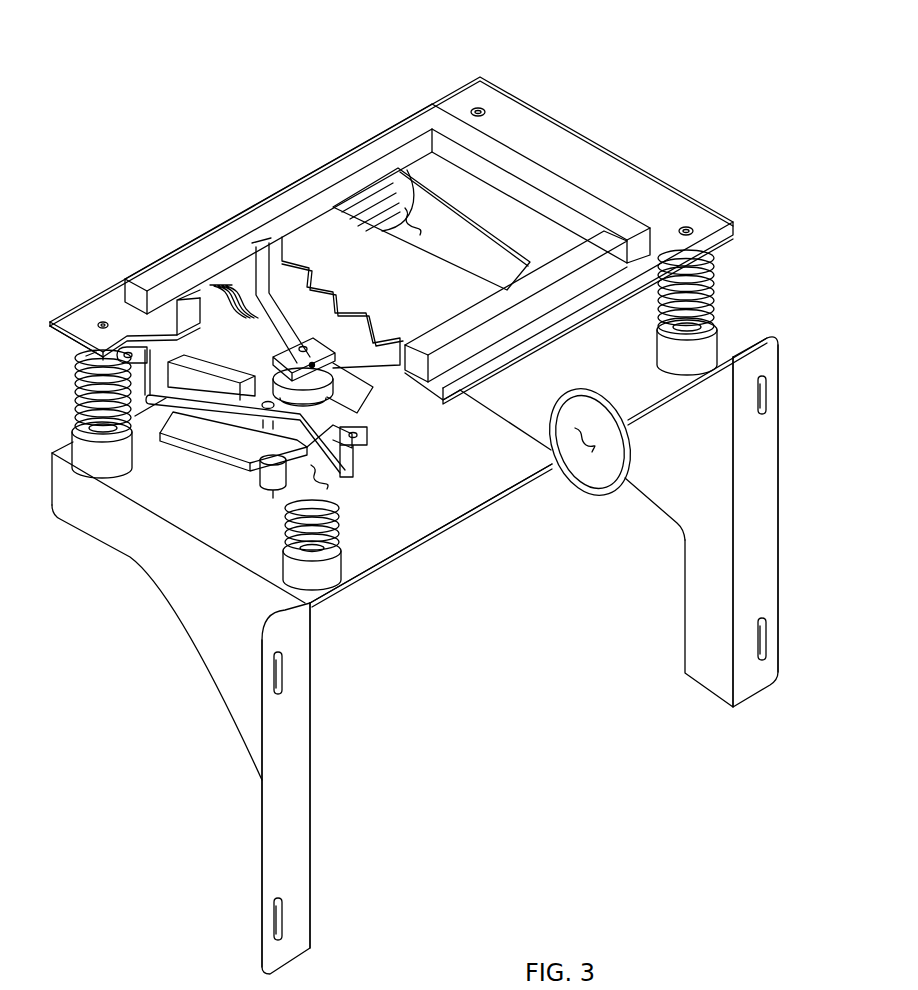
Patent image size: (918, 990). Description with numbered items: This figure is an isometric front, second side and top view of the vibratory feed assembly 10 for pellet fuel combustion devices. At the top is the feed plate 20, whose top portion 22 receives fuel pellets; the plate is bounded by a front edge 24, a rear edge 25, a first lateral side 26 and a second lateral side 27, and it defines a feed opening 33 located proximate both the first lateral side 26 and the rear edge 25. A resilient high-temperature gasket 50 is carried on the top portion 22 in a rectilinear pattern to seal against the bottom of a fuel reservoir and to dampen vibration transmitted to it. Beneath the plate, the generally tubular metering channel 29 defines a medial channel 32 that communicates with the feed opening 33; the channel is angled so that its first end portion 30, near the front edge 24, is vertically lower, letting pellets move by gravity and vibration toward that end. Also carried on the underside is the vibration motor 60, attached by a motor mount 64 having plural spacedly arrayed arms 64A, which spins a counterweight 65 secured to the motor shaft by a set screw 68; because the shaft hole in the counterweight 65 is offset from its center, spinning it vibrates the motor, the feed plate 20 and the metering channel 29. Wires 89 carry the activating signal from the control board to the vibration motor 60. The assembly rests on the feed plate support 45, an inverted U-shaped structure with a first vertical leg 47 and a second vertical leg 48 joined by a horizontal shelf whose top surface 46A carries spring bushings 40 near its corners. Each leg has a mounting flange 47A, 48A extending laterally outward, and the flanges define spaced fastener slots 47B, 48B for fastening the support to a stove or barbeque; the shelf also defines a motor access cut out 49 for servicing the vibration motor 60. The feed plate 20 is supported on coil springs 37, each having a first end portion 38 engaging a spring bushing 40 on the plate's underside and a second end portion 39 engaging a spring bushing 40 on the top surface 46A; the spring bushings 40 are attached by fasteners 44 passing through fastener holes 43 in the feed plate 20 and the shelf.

The vibratory feed assembly 10 is at (346, 131).
The feed plate 20 is at (469, 78).
The top portion 22 is at (322, 236).
The front edge 24 is at (456, 397).
The rear edge 25 is at (99, 297).
The first lateral side 26 is at (586, 133).
The second lateral side 27 is at (66, 336).
The metering channel 29 is at (547, 377).
The first end portion 30 is at (597, 497).
The medial channel 32 is at (586, 446).
The feed opening 33 is at (418, 234).
The springs 37 is at (694, 290).
The first end portion 38 is at (94, 362).
The second end portion 39 is at (88, 428).
The spring bushings 40 is at (720, 348).
The fastener holes 43 is at (100, 322).
The fasteners 44 is at (487, 111).
The feed plate support 45 is at (433, 541).
The top surface 46A is at (490, 467).
The first vertical leg 47 is at (700, 563).
The mounting flange 47A is at (748, 478).
The fastener slots 47B is at (757, 660).
The second vertical leg 48 is at (176, 600).
The mounting flange 48A is at (297, 727).
The fastener slots 48B is at (284, 677).
The motor access cut out 49 is at (327, 484).
The gasket 50 is at (228, 230).
The vibration motor 60 is at (213, 446).
The motor mount 64 is at (223, 399).
The arms 64A is at (358, 442).
The counterweight 65 is at (313, 338).
The set screw 68 is at (313, 367).
The wires 89 is at (216, 300).